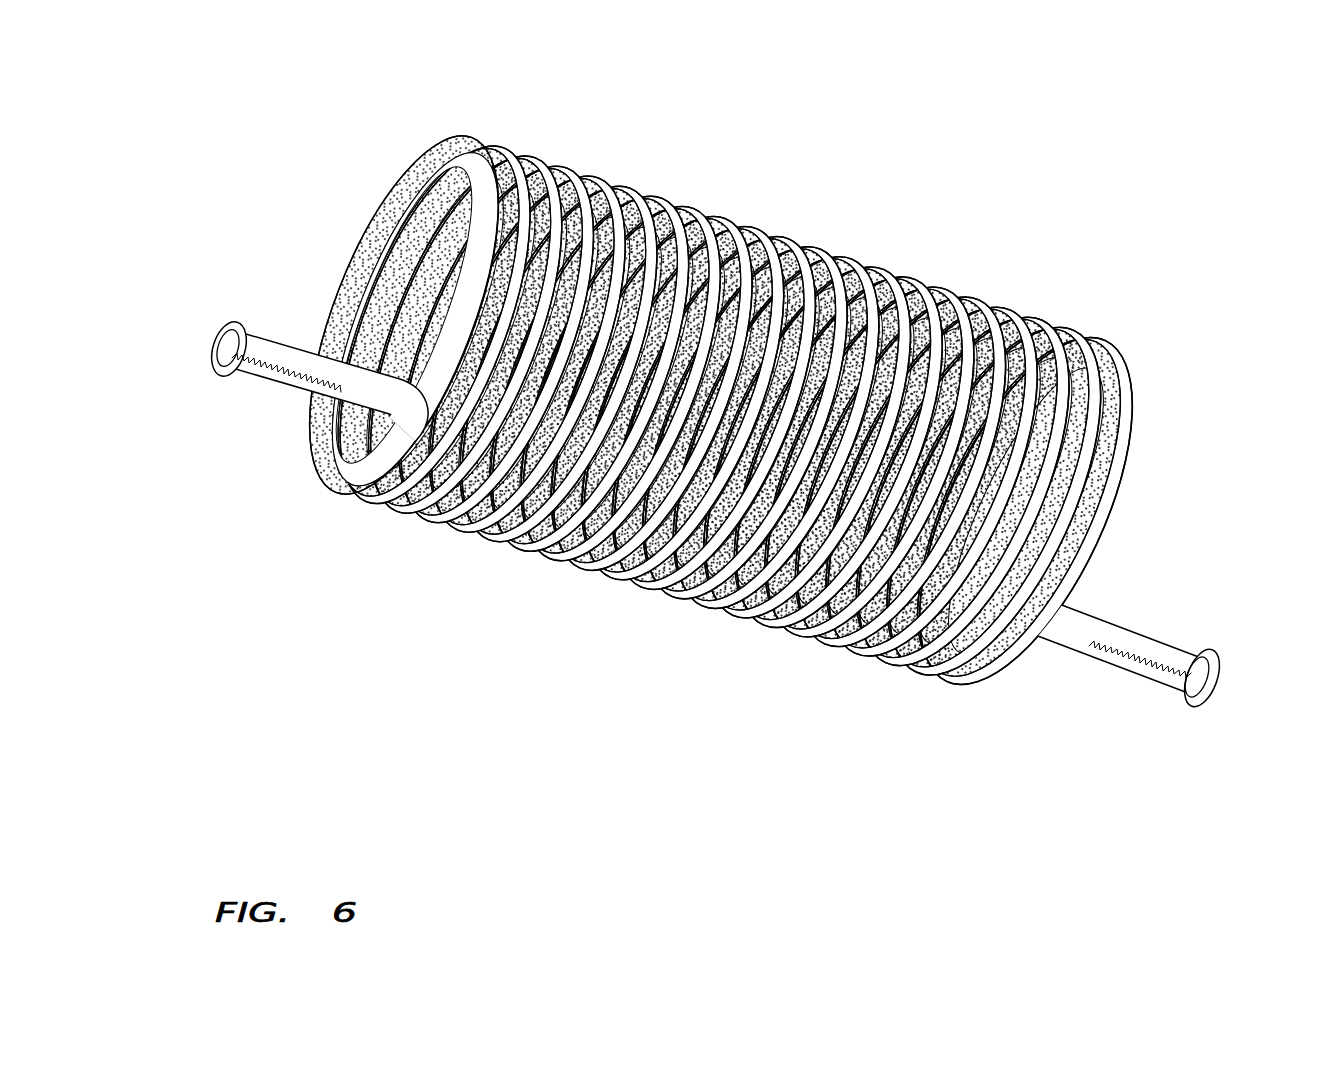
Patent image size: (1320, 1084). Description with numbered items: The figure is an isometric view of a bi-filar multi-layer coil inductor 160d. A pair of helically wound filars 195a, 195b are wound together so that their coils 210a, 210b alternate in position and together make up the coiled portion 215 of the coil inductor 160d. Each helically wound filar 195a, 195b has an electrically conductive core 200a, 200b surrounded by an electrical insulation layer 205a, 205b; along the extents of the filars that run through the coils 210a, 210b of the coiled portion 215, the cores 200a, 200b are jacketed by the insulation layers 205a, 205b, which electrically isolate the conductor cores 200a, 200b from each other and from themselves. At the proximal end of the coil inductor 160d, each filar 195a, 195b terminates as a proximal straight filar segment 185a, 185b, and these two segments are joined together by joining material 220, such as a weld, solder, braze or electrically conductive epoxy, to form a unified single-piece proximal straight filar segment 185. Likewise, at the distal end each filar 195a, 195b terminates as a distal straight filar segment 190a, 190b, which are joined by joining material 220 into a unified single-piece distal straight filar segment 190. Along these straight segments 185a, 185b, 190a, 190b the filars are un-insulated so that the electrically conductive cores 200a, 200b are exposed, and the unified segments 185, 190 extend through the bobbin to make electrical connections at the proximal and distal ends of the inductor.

The bi-filar multi-layer coil inductor 160d is at (872, 185).
The unified single-piece proximal straight filar segment 185 is at (222, 378).
The proximal straight filar segment 185a is at (247, 378).
The proximal straight filar segment 185b is at (257, 330).
The unified single-piece distal straight filar segment 190 is at (1207, 649).
The distal straight filar segment 190a is at (1165, 690).
The distal straight filar segment 190b is at (1147, 637).
The helically wound filar 195a is at (293, 389).
The helically wound filar 195b is at (292, 347).
The electrically conductive core 200a is at (368, 482).
The electrically conductive core 200b is at (298, 368).
The electrical insulation layer 205a is at (420, 500).
The electrical insulation layer 205b is at (488, 520).
The coil 210a is at (593, 166).
The coil 210b is at (637, 183).
The coiled portion 215 is at (980, 782).
The joining material 220 is at (273, 372).